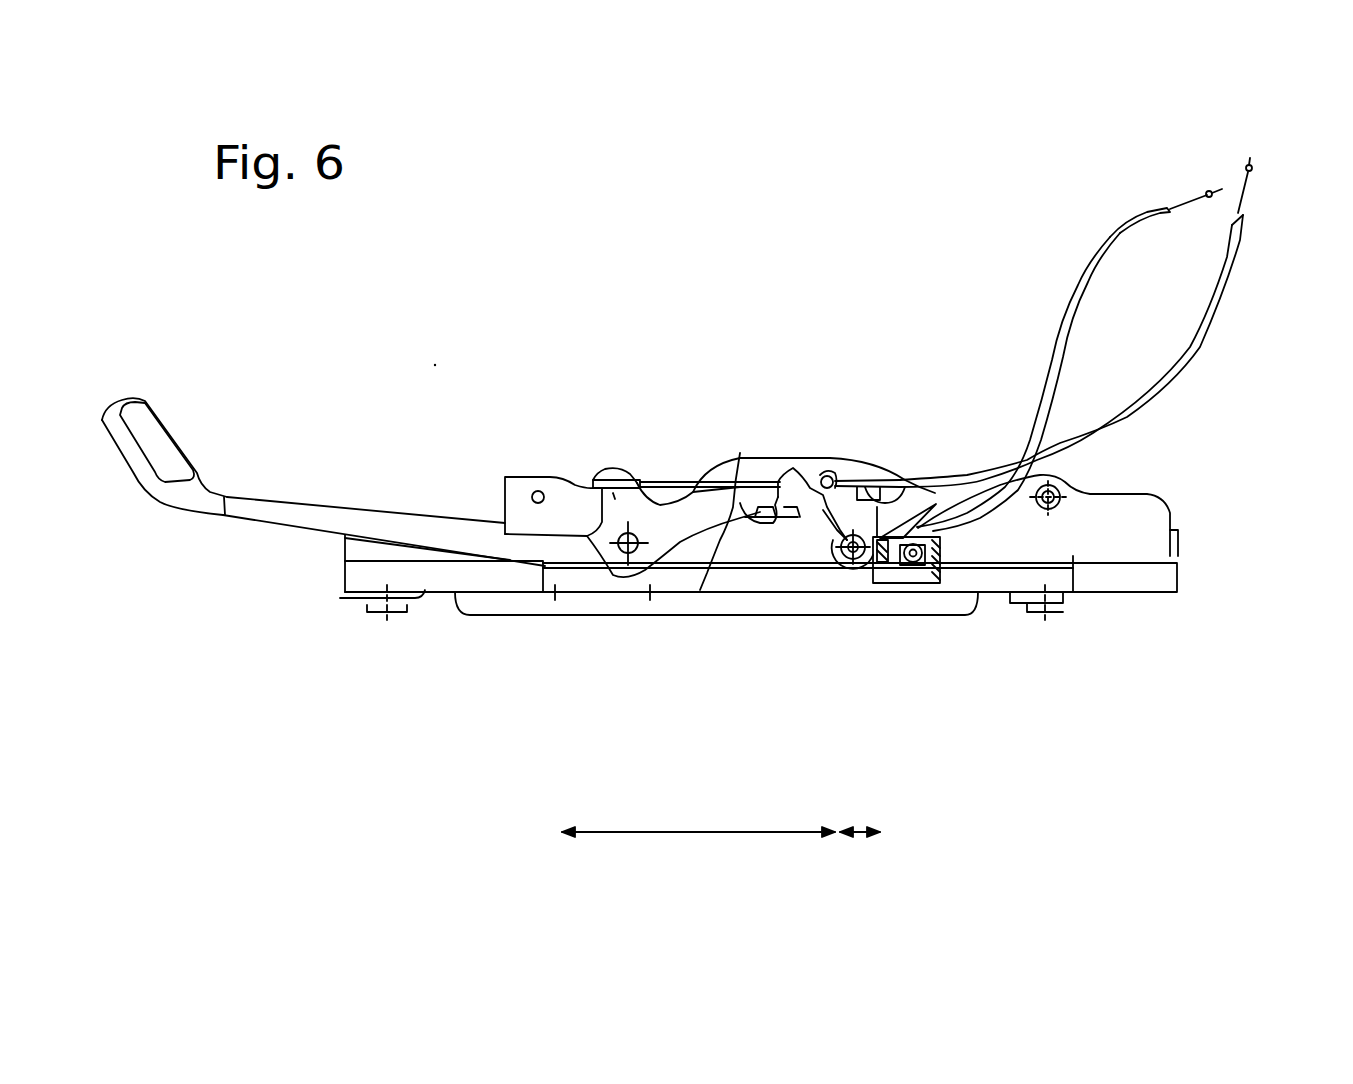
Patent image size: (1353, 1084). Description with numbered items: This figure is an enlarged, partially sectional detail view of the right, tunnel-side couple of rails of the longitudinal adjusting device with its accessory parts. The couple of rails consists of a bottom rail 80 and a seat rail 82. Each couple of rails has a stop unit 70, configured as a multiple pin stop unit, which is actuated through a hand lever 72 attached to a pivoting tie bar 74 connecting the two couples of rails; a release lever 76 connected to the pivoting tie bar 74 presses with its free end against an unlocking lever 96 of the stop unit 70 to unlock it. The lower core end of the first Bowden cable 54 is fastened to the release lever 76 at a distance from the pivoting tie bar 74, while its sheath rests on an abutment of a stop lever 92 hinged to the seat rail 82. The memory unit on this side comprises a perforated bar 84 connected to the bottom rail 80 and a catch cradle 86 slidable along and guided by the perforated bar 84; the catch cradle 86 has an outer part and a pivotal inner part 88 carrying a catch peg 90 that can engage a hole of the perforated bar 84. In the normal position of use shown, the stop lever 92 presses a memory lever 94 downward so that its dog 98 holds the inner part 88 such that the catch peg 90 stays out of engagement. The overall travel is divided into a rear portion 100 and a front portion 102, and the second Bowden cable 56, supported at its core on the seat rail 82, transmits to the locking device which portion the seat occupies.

The first Bowden cable 54 is at (973, 476).
The second Bowden cable 56 is at (1112, 237).
The stop unit 70 is at (804, 500).
The hand lever 72 is at (213, 487).
The pivoting tie bar 74 is at (625, 545).
The release lever 76 is at (692, 508).
The bottom rail 80 is at (1170, 578).
The seat rail 82 is at (1150, 513).
The perforated bar 84 is at (982, 567).
The catch cradle 86 is at (938, 588).
The inner part 88 is at (897, 567).
The catch peg 90 is at (880, 567).
The stop lever 92 is at (845, 533).
The memory lever 94 is at (895, 530).
The unlocking lever 96 is at (740, 453).
The dog 98 is at (910, 540).
The rear portion 100 is at (862, 835).
The front portion 102 is at (673, 835).